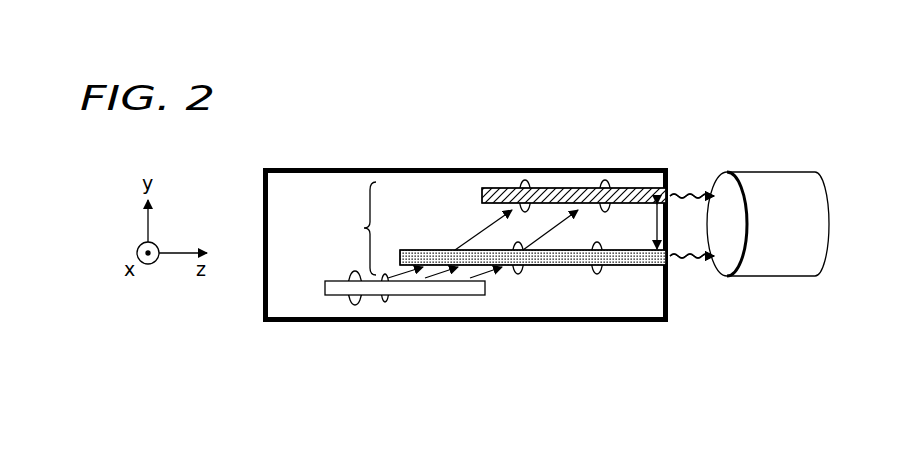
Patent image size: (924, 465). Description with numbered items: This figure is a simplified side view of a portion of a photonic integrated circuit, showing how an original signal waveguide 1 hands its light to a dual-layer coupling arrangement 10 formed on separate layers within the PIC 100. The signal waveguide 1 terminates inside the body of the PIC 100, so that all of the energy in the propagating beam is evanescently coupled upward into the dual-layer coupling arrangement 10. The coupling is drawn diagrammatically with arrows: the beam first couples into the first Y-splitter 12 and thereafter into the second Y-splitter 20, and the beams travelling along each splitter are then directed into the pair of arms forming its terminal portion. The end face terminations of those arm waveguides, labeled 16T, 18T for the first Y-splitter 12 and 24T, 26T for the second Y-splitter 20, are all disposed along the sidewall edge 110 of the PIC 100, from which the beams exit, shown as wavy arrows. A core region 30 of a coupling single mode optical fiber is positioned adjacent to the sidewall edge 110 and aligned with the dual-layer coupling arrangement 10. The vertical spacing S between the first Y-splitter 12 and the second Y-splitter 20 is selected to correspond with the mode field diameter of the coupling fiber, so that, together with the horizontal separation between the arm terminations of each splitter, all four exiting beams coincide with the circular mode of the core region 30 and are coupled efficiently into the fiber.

The photonic integrated circuit 100 is at (363, 168).
The sidewall edge 110 is at (668, 308).
The dual-layer coupling arrangement 10 is at (362, 242).
The second Y-splitter 20 is at (510, 188).
The first Y-splitter 12 is at (572, 265).
The original signal waveguide 1 is at (337, 290).
The vertical spacing S is at (647, 226).
The termination of waveguide arm 24 24T is at (672, 190).
The termination of waveguide arm 26 26T is at (732, 166).
The termination of waveguide arm 16 16T is at (668, 262).
The termination of waveguide arm 18 18T is at (752, 290).
The core region 30 is at (820, 198).